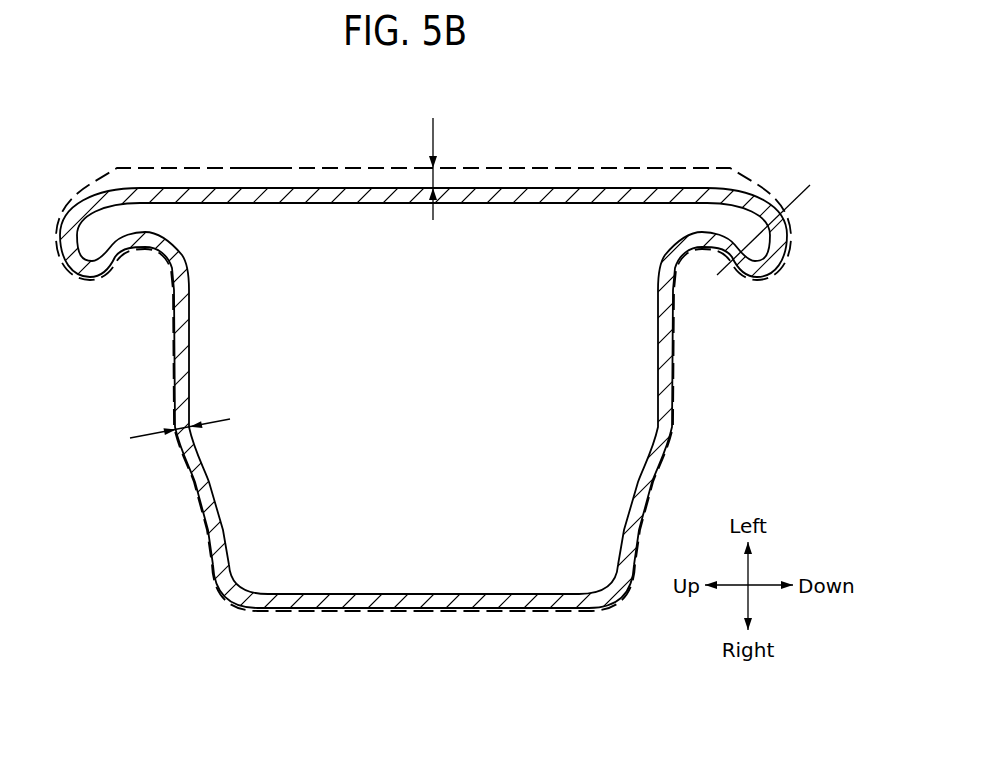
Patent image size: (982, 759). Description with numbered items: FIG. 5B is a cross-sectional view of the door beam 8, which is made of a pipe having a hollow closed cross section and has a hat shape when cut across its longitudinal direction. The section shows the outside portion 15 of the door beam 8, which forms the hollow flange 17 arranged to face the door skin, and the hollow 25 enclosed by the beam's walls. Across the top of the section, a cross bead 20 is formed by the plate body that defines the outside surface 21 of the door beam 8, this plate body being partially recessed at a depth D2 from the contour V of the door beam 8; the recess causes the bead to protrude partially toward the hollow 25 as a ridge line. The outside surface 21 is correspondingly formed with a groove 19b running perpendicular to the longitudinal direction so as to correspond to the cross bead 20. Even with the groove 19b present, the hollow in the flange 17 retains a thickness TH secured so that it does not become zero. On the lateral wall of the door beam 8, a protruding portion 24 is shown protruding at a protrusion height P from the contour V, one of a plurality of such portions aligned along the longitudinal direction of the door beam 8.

The door beam 8 is at (479, 150).
The outside portion 15 is at (750, 152).
The flange 17 is at (100, 210).
The grooves 19b is at (206, 178).
The cross beads 20 is at (363, 187).
The outside surface 21 is at (562, 166).
The protruding portions 24 is at (163, 476).
The hollow 25 is at (426, 413).
The contour V is at (257, 165).
The depth D2 is at (417, 169).
The thickness TH is at (772, 230).
The protrusion height P is at (180, 422).